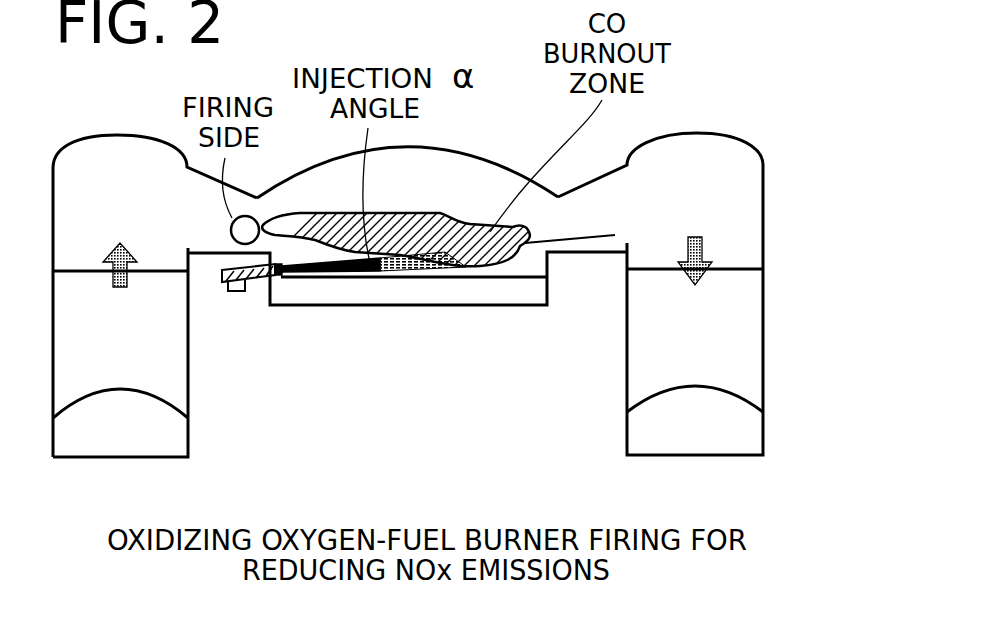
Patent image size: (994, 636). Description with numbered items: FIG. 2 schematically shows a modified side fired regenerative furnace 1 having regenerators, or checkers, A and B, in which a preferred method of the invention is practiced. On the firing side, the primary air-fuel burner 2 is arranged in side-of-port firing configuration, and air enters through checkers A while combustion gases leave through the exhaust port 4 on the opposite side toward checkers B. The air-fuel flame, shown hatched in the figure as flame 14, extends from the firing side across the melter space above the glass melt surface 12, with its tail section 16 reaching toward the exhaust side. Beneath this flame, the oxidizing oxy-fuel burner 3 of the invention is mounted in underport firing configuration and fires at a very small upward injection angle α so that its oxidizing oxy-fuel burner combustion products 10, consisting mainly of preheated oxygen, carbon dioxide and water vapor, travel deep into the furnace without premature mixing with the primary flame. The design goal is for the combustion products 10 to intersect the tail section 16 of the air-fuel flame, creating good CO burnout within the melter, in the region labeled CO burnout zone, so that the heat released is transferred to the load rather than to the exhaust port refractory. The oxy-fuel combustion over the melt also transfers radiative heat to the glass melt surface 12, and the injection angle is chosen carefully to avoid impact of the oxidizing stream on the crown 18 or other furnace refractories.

The side fired regenerative furnace 1 is at (471, 280).
The primary air-fuel burner 2 is at (259, 226).
The oxidizing oxy-fuel burner 3 is at (236, 290).
The exhaust port 4 is at (695, 287).
The oxidizing oxy-fuel burner combustion products 10 is at (308, 273).
The glass melt surface 12 is at (414, 291).
The flame 14 is at (470, 230).
The tail section of the air-fuel flame 16 is at (527, 234).
The crown 18 is at (468, 150).